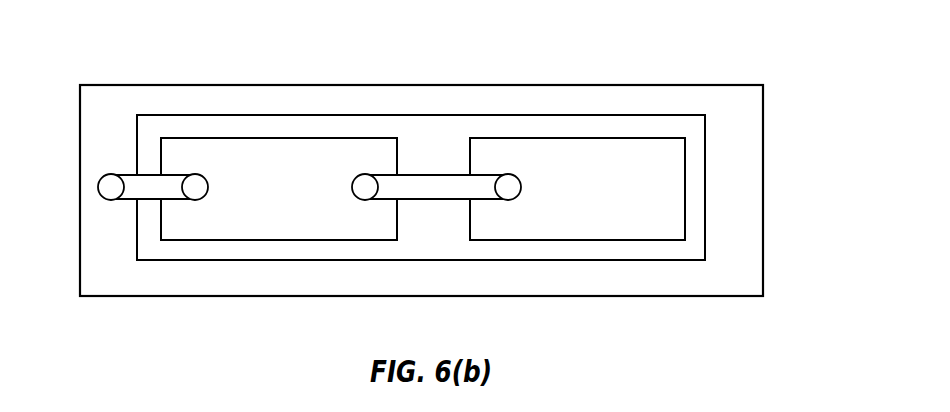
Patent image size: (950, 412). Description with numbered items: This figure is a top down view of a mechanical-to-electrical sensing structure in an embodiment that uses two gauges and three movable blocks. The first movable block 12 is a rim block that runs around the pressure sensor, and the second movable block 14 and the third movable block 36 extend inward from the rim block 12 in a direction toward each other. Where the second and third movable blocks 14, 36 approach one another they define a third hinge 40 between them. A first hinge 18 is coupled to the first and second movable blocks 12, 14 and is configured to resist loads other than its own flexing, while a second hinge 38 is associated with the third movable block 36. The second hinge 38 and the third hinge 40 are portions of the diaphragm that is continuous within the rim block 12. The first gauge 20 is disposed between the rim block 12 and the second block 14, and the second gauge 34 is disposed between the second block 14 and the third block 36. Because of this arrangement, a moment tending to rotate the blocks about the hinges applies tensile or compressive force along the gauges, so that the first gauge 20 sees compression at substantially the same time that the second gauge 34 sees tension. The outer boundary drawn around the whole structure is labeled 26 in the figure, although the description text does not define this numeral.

The first movable block 12 is at (453, 291).
The second movable block 14 is at (294, 202).
The first hinge 18 is at (126, 123).
The first gauge 20 is at (153, 192).
The package 26 is at (763, 190).
The second gauge 34 is at (418, 190).
The third movable block 36 is at (594, 203).
The second hinge 38 is at (750, 167).
The third hinge 40 is at (453, 150).